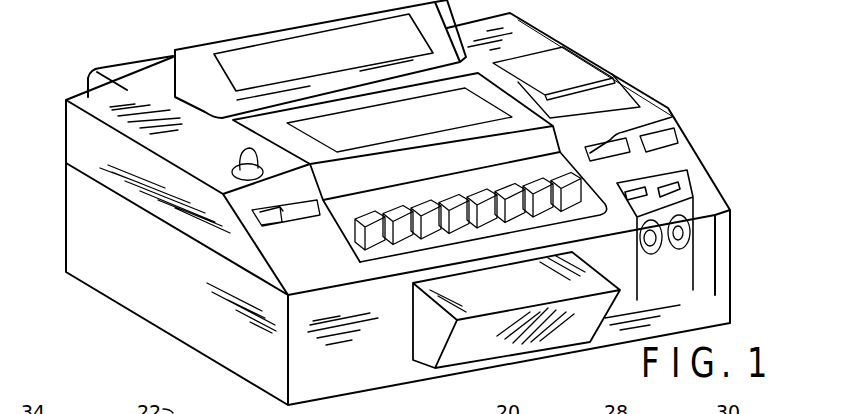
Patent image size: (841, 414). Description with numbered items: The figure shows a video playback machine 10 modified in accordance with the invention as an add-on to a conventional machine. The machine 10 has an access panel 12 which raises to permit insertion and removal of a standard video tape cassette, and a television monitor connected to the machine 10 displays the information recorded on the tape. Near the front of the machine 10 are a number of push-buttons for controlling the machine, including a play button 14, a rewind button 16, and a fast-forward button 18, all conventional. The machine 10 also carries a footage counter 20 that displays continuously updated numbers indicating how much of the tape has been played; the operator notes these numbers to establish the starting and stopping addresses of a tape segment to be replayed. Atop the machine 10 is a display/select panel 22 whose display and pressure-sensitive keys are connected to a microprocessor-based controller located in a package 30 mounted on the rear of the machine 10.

The video playback machine 10 is at (68, 298).
The access panel 12 is at (449, 118).
The play button 14 is at (398, 248).
The rewind button 16 is at (452, 205).
The fast-forward button 18 is at (503, 193).
The footage counter 20 is at (672, 117).
The display/select panel 22 is at (263, 27).
The package 30 is at (128, 60).